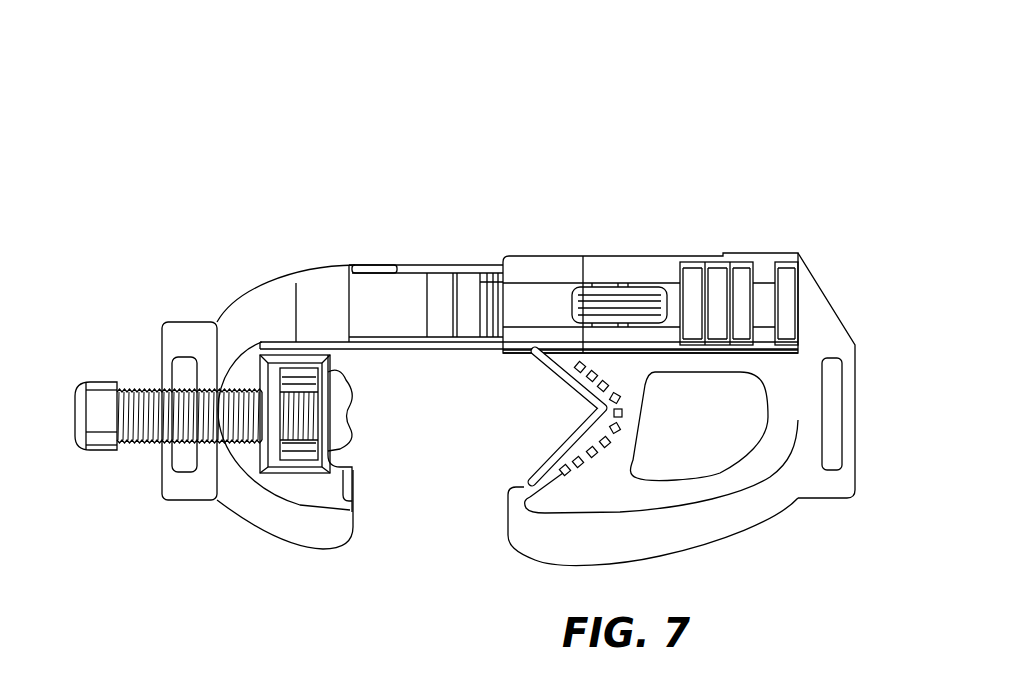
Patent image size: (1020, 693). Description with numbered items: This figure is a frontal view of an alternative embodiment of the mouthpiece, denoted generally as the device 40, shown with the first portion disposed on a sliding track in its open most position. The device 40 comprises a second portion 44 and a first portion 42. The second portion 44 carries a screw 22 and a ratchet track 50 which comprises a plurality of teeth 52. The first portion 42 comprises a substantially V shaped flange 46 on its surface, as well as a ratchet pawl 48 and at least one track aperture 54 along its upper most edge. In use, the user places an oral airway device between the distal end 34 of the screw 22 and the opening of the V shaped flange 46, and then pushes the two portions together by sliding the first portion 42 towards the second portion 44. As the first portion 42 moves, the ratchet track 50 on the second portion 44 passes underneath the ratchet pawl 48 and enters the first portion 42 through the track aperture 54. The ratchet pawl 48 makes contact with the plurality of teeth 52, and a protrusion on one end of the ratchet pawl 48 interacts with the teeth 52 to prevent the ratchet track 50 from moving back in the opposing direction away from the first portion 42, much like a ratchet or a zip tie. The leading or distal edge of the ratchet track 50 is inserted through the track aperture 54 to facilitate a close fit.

The screw 22 is at (105, 385).
The distal end 34 is at (343, 392).
The device 40 is at (862, 270).
The first portion 42 is at (737, 508).
The second portion 44 is at (297, 520).
The V shaped flange 46 is at (540, 468).
The ratchet pawl 48 is at (634, 298).
The ratchet track 50 is at (397, 266).
The plurality of teeth 52 is at (496, 297).
The track aperture 54 is at (789, 276).